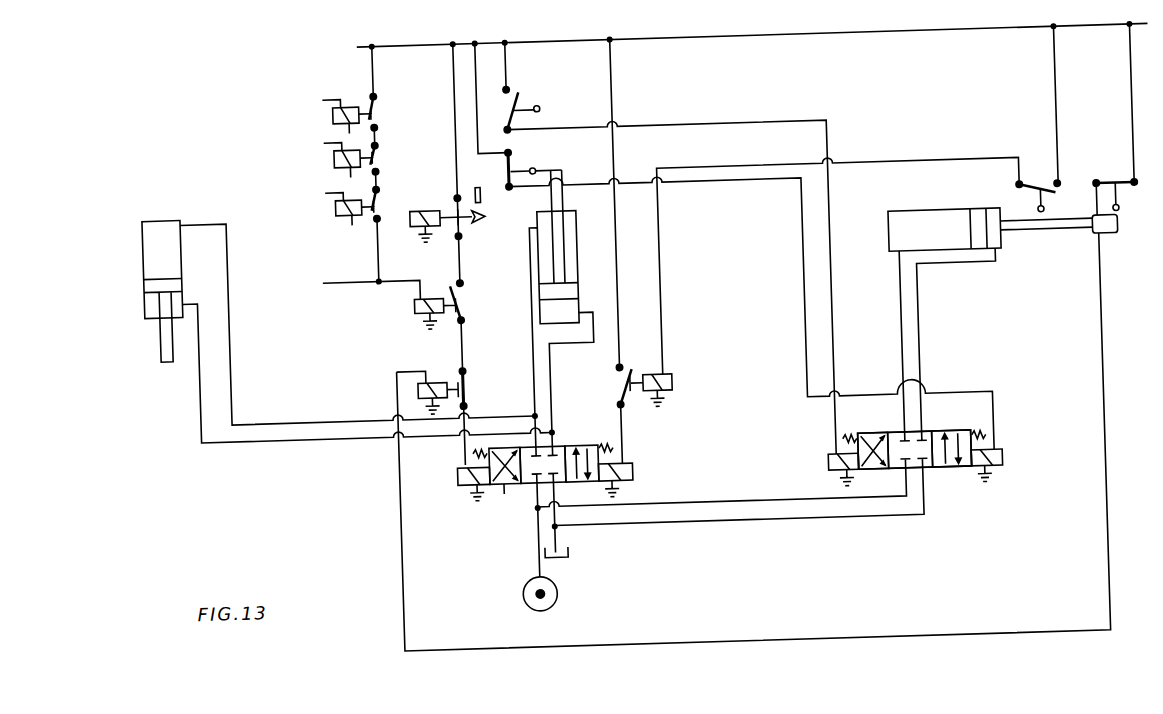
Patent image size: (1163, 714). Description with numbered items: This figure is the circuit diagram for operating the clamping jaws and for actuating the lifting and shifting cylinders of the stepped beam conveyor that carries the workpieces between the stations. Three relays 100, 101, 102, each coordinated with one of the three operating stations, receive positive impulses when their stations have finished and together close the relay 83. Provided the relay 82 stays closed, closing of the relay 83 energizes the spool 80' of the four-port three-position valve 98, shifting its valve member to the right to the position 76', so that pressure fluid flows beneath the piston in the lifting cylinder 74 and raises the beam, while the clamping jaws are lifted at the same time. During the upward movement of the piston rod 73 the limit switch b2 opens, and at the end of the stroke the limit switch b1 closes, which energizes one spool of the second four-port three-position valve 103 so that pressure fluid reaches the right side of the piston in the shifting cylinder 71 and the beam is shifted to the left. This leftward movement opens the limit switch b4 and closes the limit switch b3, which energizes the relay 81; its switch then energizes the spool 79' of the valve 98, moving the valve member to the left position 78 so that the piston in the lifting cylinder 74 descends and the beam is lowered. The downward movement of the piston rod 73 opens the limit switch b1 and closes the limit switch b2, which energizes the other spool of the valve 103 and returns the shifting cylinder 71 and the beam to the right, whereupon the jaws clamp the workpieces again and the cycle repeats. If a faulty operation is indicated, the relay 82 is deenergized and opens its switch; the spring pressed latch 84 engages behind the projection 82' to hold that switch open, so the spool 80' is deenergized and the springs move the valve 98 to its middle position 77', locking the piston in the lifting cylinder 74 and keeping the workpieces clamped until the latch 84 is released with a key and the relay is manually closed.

The relay 100 is at (340, 106).
The relay 101 is at (340, 153).
The relay 102 is at (340, 202).
The relay 82 is at (440, 202).
The projection 82' is at (491, 229).
The spring pressed latch 84 is at (486, 192).
The piston rod 73 is at (569, 228).
The lifting cylinder 74 is at (541, 288).
The relay 83 is at (414, 302).
The relay 81 is at (671, 380).
The shifting cylinder 71 is at (943, 220).
The position 76' is at (497, 483).
The middle position 77' is at (552, 448).
The position 78 is at (572, 445).
The spool 79' is at (641, 475).
The spool 80' is at (452, 484).
The four-port three-position valve 98 is at (518, 506).
The four-port three-position valve 103 is at (941, 506).
The limit switch b1 is at (511, 110).
The limit switch b2 is at (516, 169).
The limit switch b3 is at (1037, 119).
The limit switch b4 is at (1113, 119).